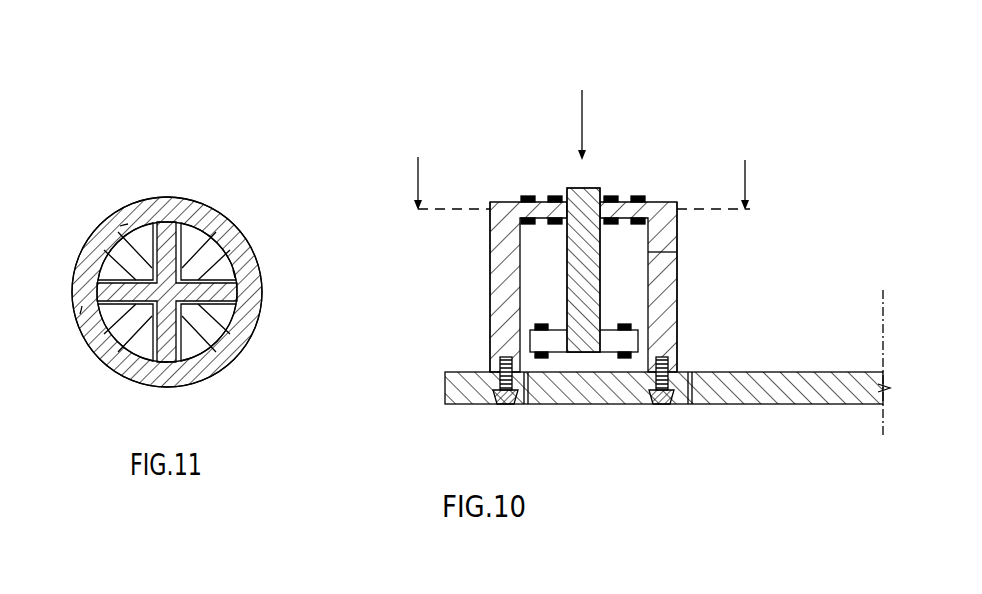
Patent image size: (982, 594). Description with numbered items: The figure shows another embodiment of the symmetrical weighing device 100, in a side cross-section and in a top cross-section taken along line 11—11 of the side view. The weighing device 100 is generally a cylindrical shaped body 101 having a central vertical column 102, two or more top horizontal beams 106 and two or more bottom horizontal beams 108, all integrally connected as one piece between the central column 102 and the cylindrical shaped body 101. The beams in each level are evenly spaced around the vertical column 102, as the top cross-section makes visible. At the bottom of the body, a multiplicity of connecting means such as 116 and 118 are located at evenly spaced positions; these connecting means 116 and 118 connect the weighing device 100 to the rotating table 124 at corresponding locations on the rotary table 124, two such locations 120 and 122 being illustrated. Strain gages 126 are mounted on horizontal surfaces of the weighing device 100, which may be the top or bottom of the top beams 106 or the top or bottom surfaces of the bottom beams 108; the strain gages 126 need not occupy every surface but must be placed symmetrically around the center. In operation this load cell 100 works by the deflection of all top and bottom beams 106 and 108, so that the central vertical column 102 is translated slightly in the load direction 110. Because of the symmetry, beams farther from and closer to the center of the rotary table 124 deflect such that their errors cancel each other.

In FIG. 11, the weighing device 100 is at (232, 176).
In FIG. 10, the weighing device 100 is at (607, 125).
In FIG. 11, the cylindrical shaped body 101 is at (100, 342).
In FIG. 10, the cylindrical shaped body 101 is at (667, 224).
In FIG. 11, the central vertical column 102 is at (182, 297).
In FIG. 10, the central vertical column 102 is at (567, 297).
In FIG. 11, the top horizontal beams 106 is at (127, 224).
In FIG. 10, the top horizontal beams 106 is at (660, 252).
In FIG. 11, the bottom horizontal beams 108 is at (207, 248).
In FIG. 10, the bottom horizontal beams 108 is at (630, 343).
In FIG. 10, the load direction 110 is at (585, 100).
In FIG. 10, the connecting means 116 is at (528, 405).
In FIG. 10, the connecting means 118 is at (692, 390).
In FIG. 10, the connecting location 120 is at (503, 406).
In FIG. 10, the connecting location 122 is at (667, 405).
In FIG. 10, the rotating table 124 is at (833, 400).
In FIG. 10, the strain gages 126 is at (555, 196).
In FIG. 10, the section line 11— 11 is at (582, 172).